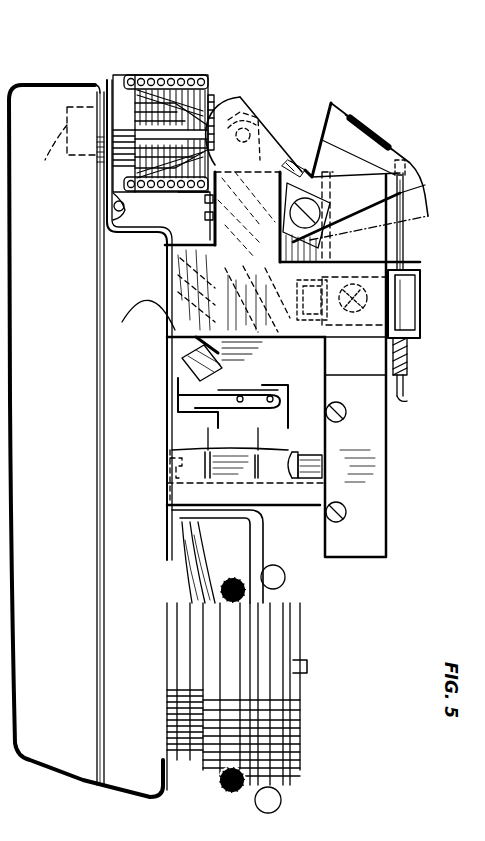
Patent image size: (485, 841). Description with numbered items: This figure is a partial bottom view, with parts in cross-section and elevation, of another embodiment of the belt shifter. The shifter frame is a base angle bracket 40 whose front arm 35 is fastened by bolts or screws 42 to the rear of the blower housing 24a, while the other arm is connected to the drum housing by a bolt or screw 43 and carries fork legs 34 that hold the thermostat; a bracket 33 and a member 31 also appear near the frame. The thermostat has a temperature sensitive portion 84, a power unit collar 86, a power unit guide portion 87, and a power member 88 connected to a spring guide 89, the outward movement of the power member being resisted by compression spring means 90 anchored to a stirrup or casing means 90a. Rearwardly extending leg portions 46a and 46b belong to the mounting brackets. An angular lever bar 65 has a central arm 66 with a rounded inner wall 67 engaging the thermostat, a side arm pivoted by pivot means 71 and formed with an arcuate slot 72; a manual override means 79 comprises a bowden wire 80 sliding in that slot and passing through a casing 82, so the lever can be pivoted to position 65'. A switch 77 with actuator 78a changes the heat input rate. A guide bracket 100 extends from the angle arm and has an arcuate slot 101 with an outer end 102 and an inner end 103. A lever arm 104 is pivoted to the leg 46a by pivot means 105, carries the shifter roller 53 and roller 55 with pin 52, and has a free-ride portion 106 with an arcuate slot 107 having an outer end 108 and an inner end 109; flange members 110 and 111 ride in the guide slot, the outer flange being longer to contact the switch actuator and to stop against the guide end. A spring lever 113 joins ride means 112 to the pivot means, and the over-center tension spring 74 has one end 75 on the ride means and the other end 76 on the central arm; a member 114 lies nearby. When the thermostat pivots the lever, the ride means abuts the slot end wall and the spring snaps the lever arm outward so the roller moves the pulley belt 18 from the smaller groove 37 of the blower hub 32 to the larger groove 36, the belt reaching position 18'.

The pulley belt 18 is at (219, 787).
The pulley belt shifted position 18' is at (296, 793).
The blower housing 24a is at (122, 575).
The coil layer 31 is at (300, 714).
The blower hub 32 is at (299, 676).
The bracket 33 is at (108, 178).
The fork legs 34 is at (110, 100).
The angle bracket arm 35 is at (172, 340).
The groove 36 is at (295, 640).
The groove 37 is at (200, 580).
The base angle bracket 40 is at (162, 240).
The bolts or screws 42 is at (167, 478).
The bolt or screw 43 is at (128, 207).
The leg portion 46a is at (194, 216).
The leg portion 46b is at (392, 186).
The pin 52 is at (301, 567).
The shifter roller 53 is at (222, 525).
The roller 55 is at (233, 582).
The angular lever bar 65 is at (370, 139).
The lever bar pivoted position 65' is at (424, 200).
The central arm 66 is at (255, 97).
The rounded inner wall 67 is at (241, 96).
The pivot means 71 is at (320, 210).
The arcuate slot 72 is at (386, 149).
The tension coil spring 74 is at (139, 310).
The spring end 75 is at (180, 395).
The spring end 76 is at (289, 113).
The switch 77 is at (386, 560).
The screw 78a is at (347, 521).
The manual override means 79 is at (416, 314).
The bowden wire 80 is at (412, 256).
The casing 82 is at (408, 358).
The temperature sensitive portion 84 is at (63, 145).
The power unit collar 86 is at (124, 112).
The power unit guide portion 87 is at (147, 88).
The power member 88 is at (165, 78).
The spring guide 89 is at (193, 78).
The compression spring means 90 is at (189, 207).
The stirrup or casing means 90a is at (211, 95).
The guide bracket 100 is at (262, 472).
The arcuate slot 101 is at (246, 429).
The outer end 102 is at (305, 433).
The inner end 103 is at (167, 450).
The lever arm 104 is at (246, 363).
The pivot means 105 is at (254, 141).
The free-ride portion 106 is at (350, 430).
The arcuate slot 107 is at (214, 365).
The outer end 108 is at (233, 393).
The inner end 109 is at (180, 370).
The outer flange 110 is at (298, 485).
The inner flange 111 is at (232, 448).
The ride means 112 is at (185, 300).
The spring lever 113 is at (326, 257).
The partition 114 is at (284, 356).